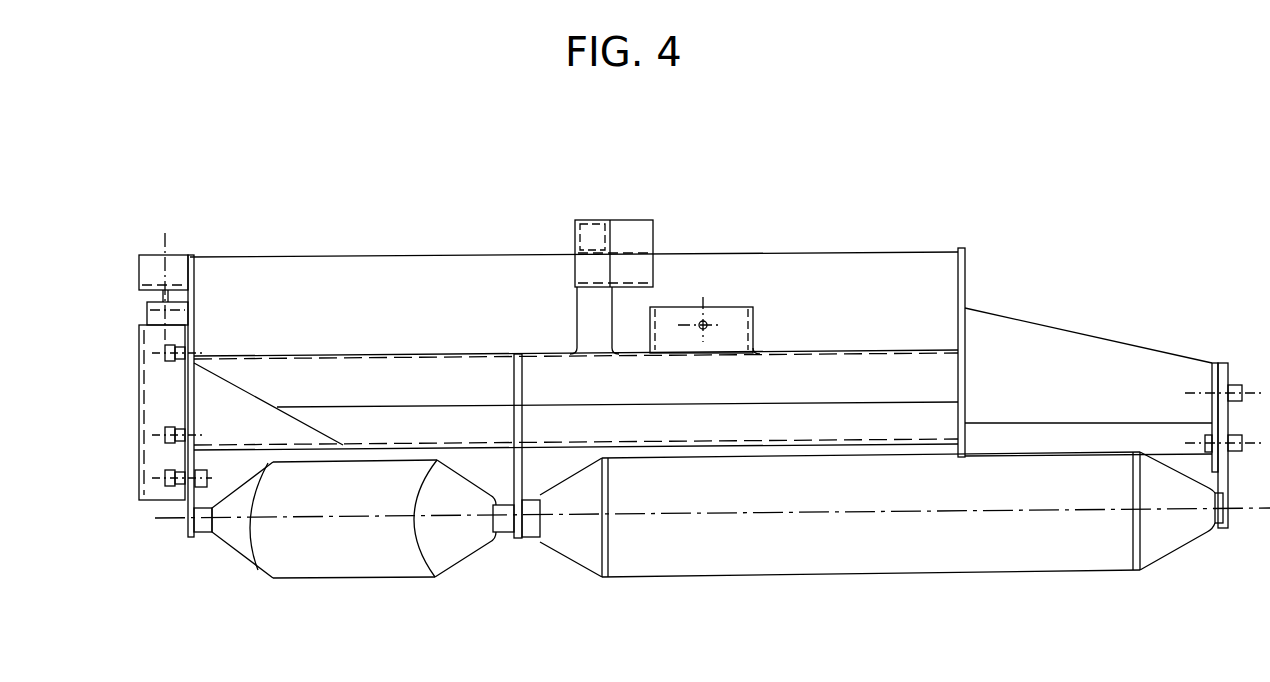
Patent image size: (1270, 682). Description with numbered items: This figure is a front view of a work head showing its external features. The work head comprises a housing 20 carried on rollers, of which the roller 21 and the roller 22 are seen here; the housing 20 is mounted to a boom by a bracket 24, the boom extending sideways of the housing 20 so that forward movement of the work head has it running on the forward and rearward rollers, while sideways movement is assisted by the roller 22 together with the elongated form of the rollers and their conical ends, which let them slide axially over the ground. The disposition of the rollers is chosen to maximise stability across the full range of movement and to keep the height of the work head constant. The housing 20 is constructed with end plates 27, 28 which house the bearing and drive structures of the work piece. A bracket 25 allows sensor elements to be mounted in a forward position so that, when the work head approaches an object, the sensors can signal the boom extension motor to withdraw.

The housing 20 is at (854, 243).
The roller 21 is at (773, 558).
The roller 22 is at (335, 563).
The bracket 24 is at (747, 320).
The bracket 25 is at (560, 225).
The end plate 27 is at (118, 306).
The end plate 28 is at (985, 282).